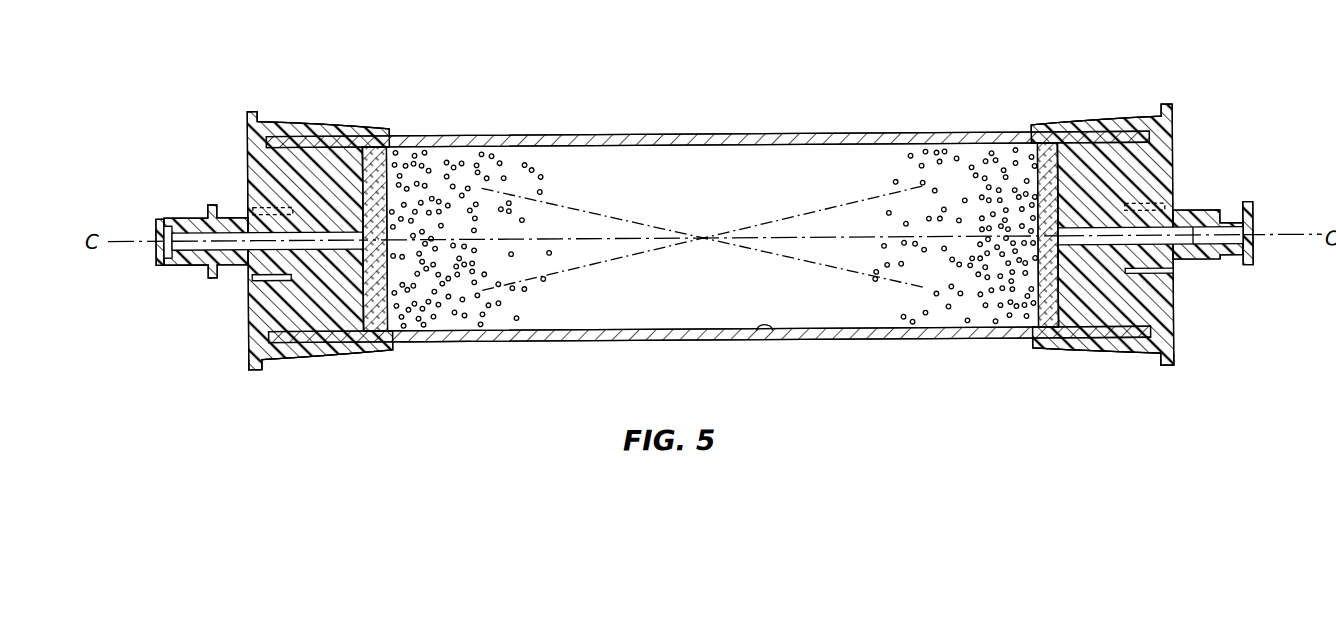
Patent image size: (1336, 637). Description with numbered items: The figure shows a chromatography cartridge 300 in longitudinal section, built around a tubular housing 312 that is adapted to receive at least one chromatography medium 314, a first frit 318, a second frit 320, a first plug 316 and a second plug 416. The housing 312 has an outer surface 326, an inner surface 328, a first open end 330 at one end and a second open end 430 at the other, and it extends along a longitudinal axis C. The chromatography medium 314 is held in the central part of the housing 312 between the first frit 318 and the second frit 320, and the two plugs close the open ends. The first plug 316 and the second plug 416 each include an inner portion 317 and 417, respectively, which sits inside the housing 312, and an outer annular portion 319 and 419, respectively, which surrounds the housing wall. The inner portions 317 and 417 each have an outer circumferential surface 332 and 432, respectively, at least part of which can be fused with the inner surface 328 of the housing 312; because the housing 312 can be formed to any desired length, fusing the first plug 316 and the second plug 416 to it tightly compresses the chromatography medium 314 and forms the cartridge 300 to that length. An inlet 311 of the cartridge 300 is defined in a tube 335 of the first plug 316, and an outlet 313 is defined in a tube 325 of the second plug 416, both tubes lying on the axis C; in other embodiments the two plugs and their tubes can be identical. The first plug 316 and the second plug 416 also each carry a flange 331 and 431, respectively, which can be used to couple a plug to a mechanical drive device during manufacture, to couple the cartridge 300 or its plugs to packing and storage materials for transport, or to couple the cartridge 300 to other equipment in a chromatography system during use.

The cartridge 300 is at (800, 90).
The inlet 311 is at (1230, 212).
The housing 312 is at (462, 134).
The outlet 313 is at (158, 220).
The chromatography medium 314 is at (430, 331).
The first plug 316 is at (1188, 151).
The inner portion 317 is at (1158, 302).
The first frit 318 is at (1045, 342).
The outer annular portion 319 is at (1080, 122).
The second frit 320 is at (388, 346).
The tube 325 is at (234, 262).
The outer surface 326 is at (885, 340).
The inner surface 328 is at (772, 331).
The first open end 330 is at (1165, 142).
The flange 331 is at (1166, 106).
The outer circumferential surface 332 is at (1148, 350).
The tube 335 is at (1205, 262).
The second plug 416 is at (238, 132).
The inner portion 417 is at (282, 165).
The outer annular portion 419 is at (322, 119).
The second open end 430 is at (250, 329).
The flange 431 is at (253, 108).
The outer circumferential surface 432 is at (282, 341).